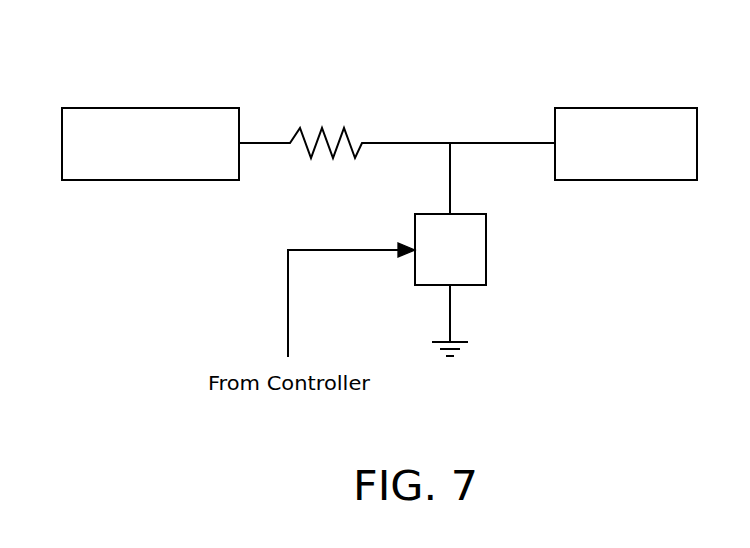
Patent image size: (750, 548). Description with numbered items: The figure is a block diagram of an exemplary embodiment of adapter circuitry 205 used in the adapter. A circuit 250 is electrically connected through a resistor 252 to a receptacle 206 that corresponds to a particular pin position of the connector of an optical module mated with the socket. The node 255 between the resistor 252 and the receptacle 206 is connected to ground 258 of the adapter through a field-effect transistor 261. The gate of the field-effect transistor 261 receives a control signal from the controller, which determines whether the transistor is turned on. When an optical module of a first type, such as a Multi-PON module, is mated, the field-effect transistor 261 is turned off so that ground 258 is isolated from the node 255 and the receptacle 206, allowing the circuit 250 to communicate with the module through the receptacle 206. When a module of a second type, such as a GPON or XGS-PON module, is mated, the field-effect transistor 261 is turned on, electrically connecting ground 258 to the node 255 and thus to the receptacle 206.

The adapter circuitry 205 is at (255, 42).
The circuit 250 is at (151, 108).
The resistor 252 is at (335, 121).
The node 255 is at (433, 143).
The receptacle 206 is at (622, 108).
The field-effect transistor 261 is at (469, 214).
The ground 258 is at (464, 342).